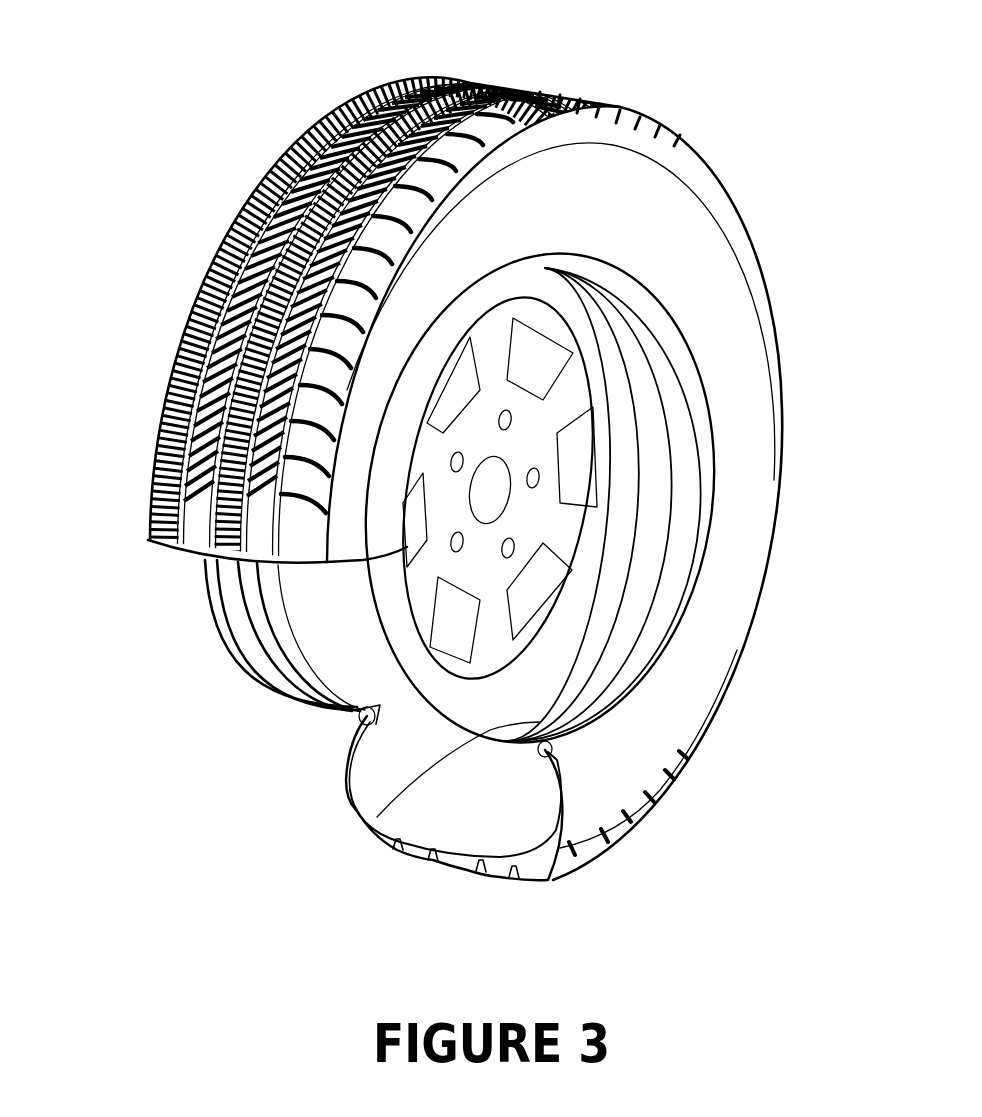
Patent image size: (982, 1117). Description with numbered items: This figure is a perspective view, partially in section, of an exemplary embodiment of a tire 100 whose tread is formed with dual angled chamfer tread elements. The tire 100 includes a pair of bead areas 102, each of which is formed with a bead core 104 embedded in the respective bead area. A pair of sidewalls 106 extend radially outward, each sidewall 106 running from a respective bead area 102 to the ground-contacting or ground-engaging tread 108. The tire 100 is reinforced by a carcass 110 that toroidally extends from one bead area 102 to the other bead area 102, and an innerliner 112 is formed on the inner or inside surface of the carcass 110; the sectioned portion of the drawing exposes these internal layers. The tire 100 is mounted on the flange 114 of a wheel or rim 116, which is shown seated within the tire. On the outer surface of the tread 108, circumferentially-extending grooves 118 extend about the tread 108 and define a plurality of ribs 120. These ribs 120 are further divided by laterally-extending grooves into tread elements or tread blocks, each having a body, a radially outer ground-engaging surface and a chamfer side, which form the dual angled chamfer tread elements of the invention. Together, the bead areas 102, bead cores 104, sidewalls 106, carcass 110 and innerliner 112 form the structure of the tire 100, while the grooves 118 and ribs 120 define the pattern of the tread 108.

The tire 100 is at (688, 134).
The bead areas 102 is at (360, 737).
The bead core 104 is at (360, 717).
The sidewalls 106 is at (733, 318).
The tread 108 is at (148, 490).
The carcass 110 is at (388, 833).
The innerliner 112 is at (497, 840).
The flange 114 is at (680, 530).
The wheel or rim 116 is at (563, 540).
The circumferentially-extending grooves 118 is at (205, 357).
The ribs 120 is at (178, 556).